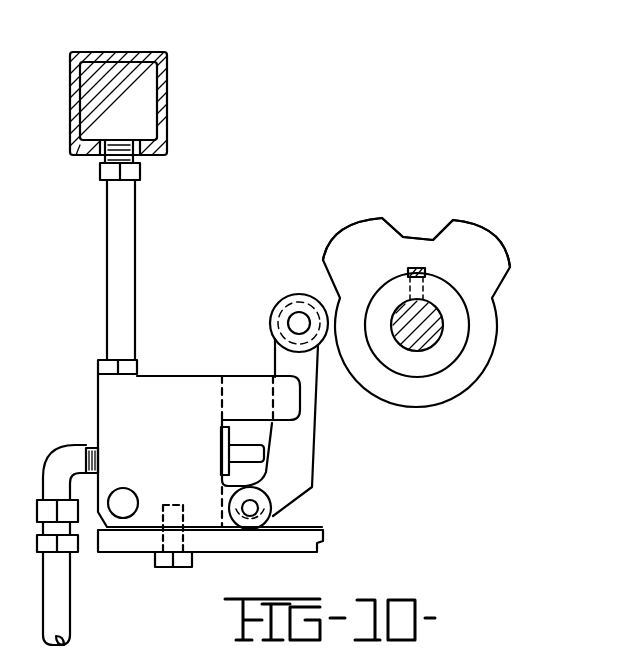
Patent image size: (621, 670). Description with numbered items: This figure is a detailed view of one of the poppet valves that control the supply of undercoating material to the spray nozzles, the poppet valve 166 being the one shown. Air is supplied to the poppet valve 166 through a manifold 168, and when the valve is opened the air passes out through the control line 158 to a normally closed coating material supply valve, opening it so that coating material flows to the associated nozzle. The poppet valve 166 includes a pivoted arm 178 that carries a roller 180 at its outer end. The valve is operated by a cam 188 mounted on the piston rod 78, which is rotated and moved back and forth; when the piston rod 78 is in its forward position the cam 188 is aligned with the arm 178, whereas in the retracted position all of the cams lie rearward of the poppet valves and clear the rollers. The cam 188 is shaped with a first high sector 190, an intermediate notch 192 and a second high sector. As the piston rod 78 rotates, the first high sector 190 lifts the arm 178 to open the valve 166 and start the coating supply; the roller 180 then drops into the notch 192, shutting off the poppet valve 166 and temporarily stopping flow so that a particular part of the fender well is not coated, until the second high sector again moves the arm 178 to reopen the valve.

The piston rod 78 is at (430, 350).
The control line 158 is at (72, 607).
The poppet valve 166 is at (158, 373).
The manifold 168 is at (165, 112).
The pivoted arm 178 is at (316, 448).
The roller 180 is at (290, 293).
The cam 188 is at (425, 404).
The first high sector 190 is at (357, 233).
The intermediate notch 192 is at (440, 223).